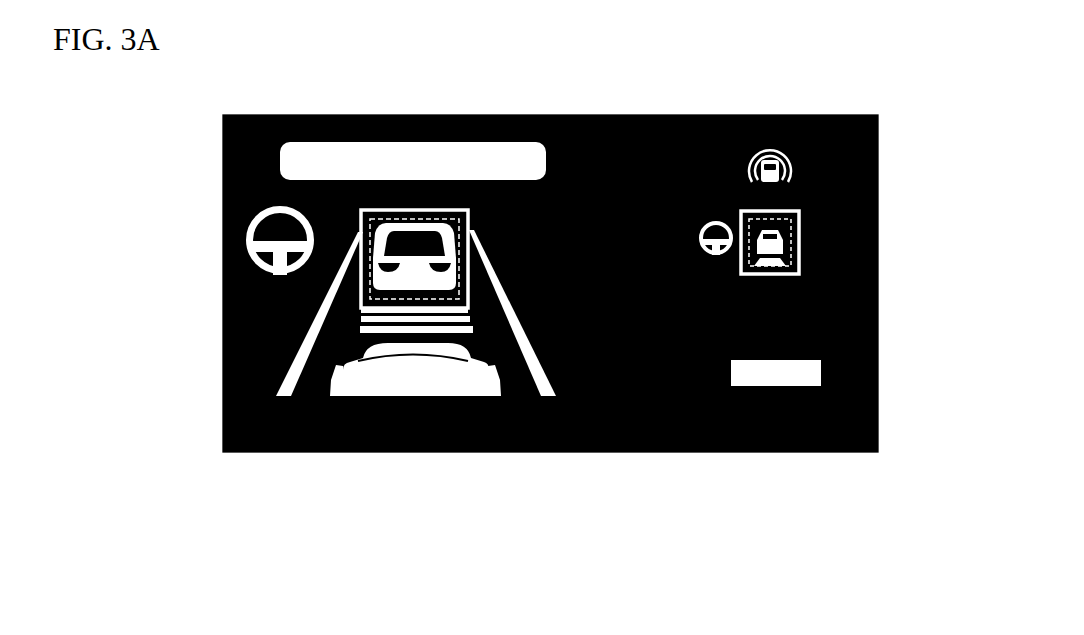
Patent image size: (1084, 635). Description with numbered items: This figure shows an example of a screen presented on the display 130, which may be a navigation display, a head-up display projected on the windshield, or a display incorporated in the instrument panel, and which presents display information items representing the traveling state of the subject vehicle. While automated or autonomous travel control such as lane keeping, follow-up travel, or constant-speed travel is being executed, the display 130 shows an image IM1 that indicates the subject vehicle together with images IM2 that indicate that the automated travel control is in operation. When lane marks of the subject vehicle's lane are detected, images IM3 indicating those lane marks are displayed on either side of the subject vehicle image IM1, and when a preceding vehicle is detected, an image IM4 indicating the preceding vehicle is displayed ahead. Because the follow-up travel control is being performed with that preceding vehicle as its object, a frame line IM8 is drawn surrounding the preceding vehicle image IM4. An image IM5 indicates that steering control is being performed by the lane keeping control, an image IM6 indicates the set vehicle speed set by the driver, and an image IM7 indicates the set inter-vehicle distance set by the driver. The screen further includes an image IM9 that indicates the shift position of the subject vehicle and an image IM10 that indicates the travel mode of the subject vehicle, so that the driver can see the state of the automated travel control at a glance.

The display 130 is at (870, 148).
The image indicating the subject vehicle IM1 is at (407, 372).
The images indicating that automated/autonomous travel control is being executed IM2 is at (522, 143).
The images indicating the lane marks IM3 is at (278, 387).
The image indicating the preceding vehicle IM4 is at (438, 224).
The image indicating that steering control is performed IM5 is at (240, 236).
The image indicating the set vehicle speed IM6 is at (857, 238).
The image indicating the set inter-vehicle distance IM7 is at (352, 321).
The frame line IM8 is at (355, 203).
The image indicating the shift position IM9 is at (786, 306).
The image indicating the travel mode IM10 is at (775, 378).